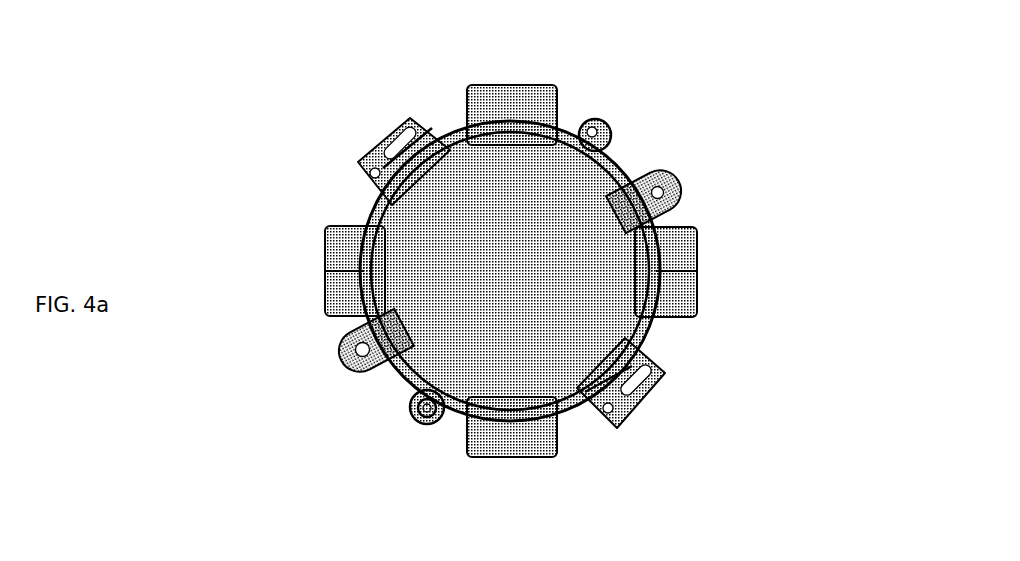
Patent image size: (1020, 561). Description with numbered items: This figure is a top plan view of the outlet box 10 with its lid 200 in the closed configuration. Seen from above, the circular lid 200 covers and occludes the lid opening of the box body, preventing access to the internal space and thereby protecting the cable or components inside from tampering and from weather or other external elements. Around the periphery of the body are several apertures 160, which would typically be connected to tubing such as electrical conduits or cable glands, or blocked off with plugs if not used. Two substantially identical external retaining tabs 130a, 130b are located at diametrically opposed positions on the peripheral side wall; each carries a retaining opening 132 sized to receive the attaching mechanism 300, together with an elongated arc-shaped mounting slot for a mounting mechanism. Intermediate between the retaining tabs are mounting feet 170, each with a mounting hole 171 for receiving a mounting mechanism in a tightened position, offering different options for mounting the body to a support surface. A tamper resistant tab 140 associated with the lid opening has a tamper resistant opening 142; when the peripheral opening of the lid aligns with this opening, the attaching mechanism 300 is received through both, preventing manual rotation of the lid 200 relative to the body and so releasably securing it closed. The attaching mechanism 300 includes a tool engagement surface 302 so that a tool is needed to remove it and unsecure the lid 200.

The outlet box 10 is at (810, 185).
The external retaining tab 130a is at (373, 130).
The external retaining tab 130b is at (655, 402).
The retaining opening 132 is at (355, 176).
The tamper resistant tab 140 is at (601, 112).
The tamper resistant opening 142 is at (608, 125).
The aperture 160 is at (527, 72).
The mounting foot 170 is at (672, 170).
The mounting hole 171 is at (677, 183).
The lid 200 is at (600, 322).
The attaching mechanism 300 is at (407, 410).
The tool engagement surface 302 is at (427, 425).